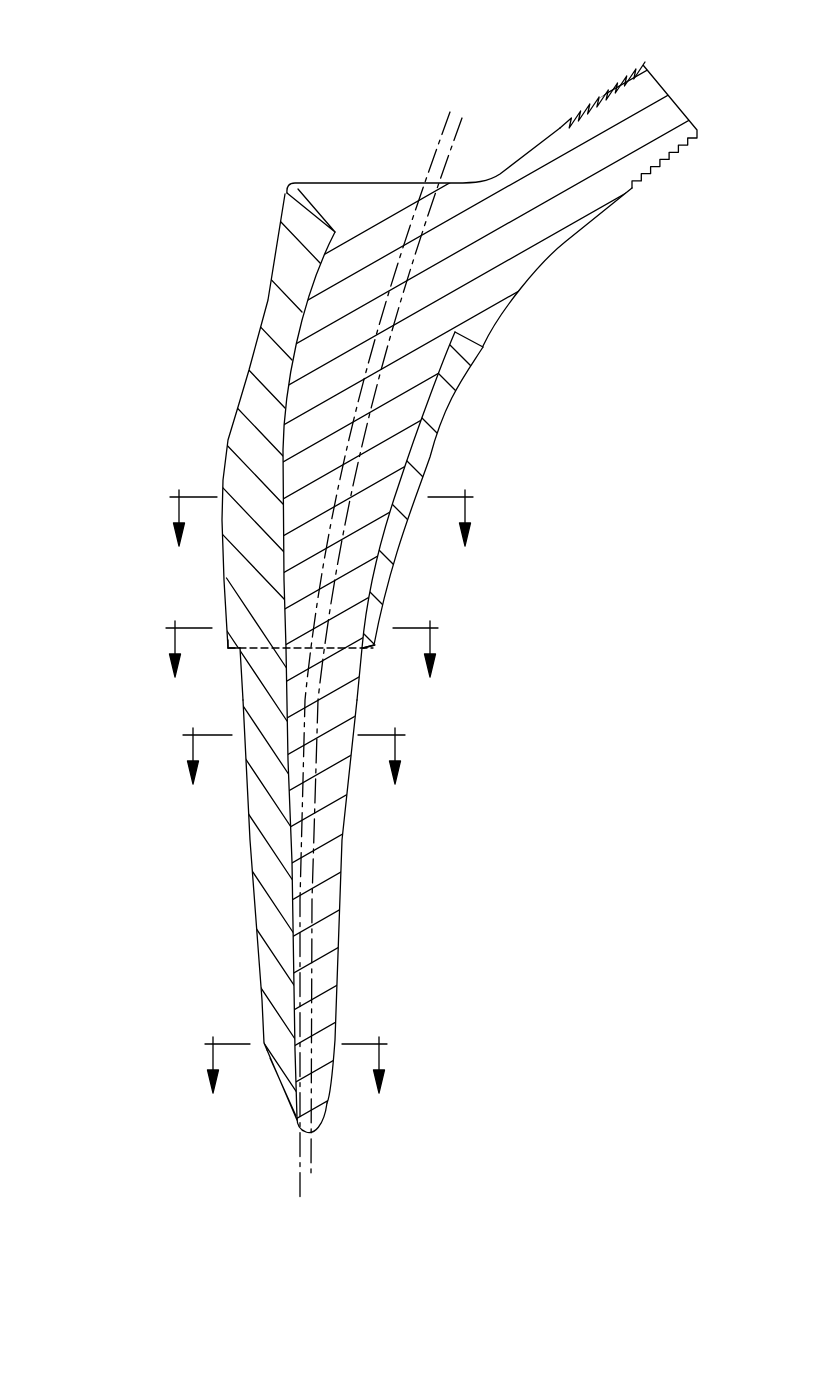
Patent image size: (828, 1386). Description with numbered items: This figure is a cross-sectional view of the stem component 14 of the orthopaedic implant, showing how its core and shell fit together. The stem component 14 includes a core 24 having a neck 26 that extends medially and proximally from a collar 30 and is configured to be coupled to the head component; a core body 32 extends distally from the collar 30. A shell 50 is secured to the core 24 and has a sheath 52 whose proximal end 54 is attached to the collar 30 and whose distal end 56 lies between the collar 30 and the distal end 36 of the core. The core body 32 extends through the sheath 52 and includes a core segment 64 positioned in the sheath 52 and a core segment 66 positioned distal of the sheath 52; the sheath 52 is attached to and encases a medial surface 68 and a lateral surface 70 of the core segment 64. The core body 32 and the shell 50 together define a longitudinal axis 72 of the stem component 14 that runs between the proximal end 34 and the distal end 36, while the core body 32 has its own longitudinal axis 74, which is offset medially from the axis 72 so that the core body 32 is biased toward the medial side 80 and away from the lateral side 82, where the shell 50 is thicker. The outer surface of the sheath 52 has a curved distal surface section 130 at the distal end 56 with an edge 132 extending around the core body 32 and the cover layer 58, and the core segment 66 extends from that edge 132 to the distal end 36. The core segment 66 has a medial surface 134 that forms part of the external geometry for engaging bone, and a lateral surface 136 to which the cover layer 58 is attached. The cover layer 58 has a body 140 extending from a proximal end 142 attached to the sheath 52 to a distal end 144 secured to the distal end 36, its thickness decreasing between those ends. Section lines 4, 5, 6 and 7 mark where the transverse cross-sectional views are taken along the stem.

The stem component 14 is at (142, 101).
The core 24 is at (416, 145).
The neck 26 is at (600, 215).
The collar 30 is at (500, 315).
The core body 32 is at (408, 372).
The proximal end 34 is at (463, 330).
The distal end 36 is at (320, 1128).
The shell 50 is at (150, 325).
The sheath 52 is at (273, 283).
The proximal end 54 is at (287, 192).
The distal end 56 is at (234, 636).
The cover layer 58 is at (262, 912).
The core segment 64 is at (405, 457).
The core segment 66 is at (326, 892).
The medial surface 68 is at (388, 536).
The lateral surface 70 is at (297, 440).
The longitudinal axis 72 is at (452, 113).
The longitudinal axis 74 is at (442, 169).
The medial side 80 is at (485, 638).
The lateral side 82 is at (110, 675).
The distal surface section 130 is at (228, 650).
The edge 132 is at (368, 655).
The medial surface 134 is at (335, 962).
The lateral surface 136 is at (292, 983).
The body 140 is at (248, 788).
The proximal end 142 is at (243, 655).
The distal end 144 is at (290, 1106).
The line 4- 4 is at (320, 536).
The line 5- 5 is at (300, 666).
The line 6- 6 is at (294, 775).
The line 7- 7 is at (296, 1083).